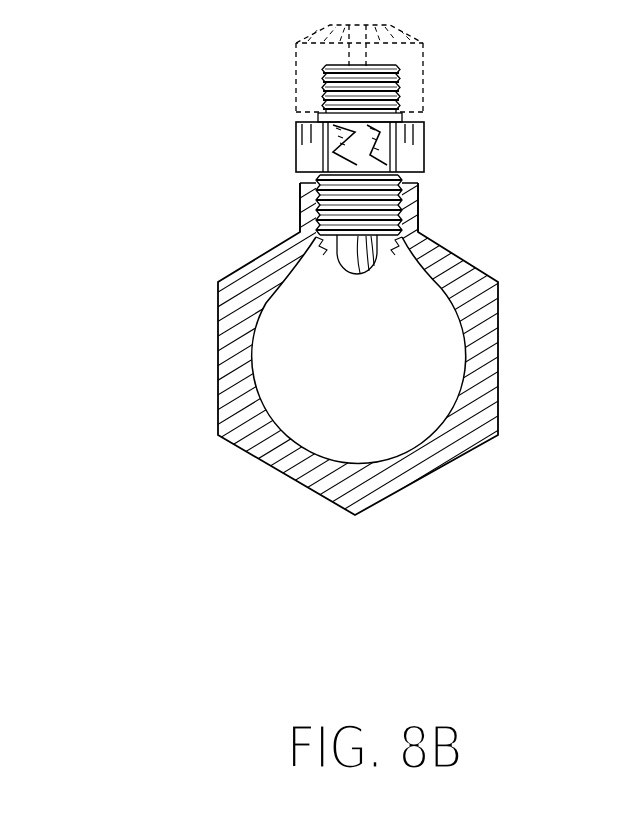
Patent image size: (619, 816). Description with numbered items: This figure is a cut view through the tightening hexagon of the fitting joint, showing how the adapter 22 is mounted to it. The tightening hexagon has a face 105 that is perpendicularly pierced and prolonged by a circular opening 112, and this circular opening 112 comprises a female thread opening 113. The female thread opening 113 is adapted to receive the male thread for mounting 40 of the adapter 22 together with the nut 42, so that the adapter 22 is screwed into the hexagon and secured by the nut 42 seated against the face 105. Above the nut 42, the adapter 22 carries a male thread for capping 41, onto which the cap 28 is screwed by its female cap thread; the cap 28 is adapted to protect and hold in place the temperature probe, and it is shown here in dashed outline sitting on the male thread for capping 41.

The adapter 22 is at (280, 64).
The cap 28 is at (412, 62).
The male thread for capping 41 is at (402, 112).
The nut 42 is at (298, 151).
The circular opening 112 is at (407, 197).
The female thread opening 113 is at (300, 216).
The face 105 is at (417, 227).
The male thread for mounting 40 is at (470, 263).